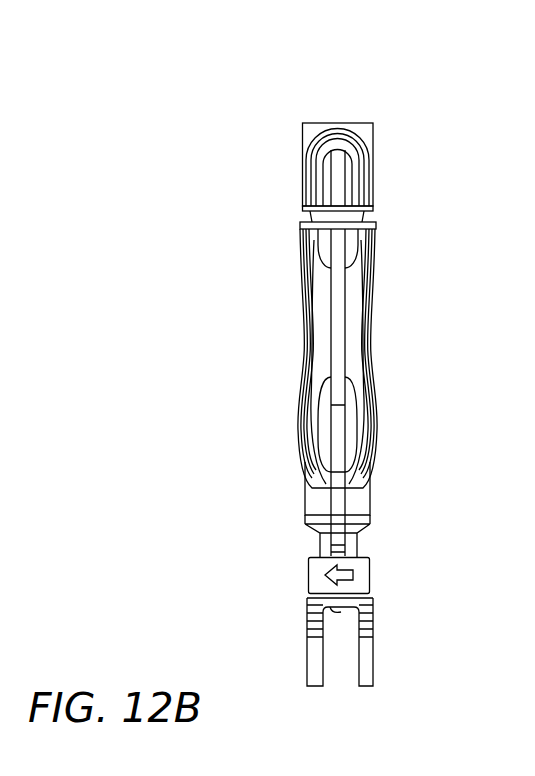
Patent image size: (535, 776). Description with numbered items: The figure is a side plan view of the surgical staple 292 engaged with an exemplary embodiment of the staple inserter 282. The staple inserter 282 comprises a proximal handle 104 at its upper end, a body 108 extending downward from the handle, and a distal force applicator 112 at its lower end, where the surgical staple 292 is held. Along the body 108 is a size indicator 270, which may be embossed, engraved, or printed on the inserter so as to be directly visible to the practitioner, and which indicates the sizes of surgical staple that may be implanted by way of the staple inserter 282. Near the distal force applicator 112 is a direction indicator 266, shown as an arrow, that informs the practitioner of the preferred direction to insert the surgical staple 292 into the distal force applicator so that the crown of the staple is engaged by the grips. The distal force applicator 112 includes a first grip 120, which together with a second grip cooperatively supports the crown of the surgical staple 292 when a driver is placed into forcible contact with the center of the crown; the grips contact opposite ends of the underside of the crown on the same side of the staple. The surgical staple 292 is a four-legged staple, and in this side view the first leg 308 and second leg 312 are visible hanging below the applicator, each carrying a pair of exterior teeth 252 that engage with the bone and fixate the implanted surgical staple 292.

The staple inserter 282 is at (366, 96).
The proximal handle 104 is at (375, 160).
The body 108 is at (375, 252).
The size indicator 270 is at (303, 326).
The distal force applicator 112 is at (380, 566).
The direction indicator 266 is at (310, 567).
The exterior teeth 252 is at (307, 618).
The first leg 308 is at (370, 650).
The second leg 312 is at (315, 668).
The first grip 120 is at (334, 605).
The surgical staple 292 is at (383, 699).